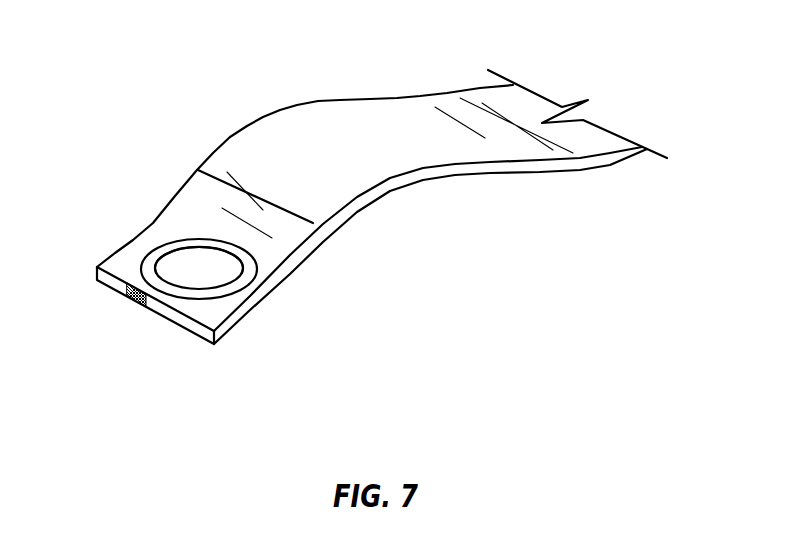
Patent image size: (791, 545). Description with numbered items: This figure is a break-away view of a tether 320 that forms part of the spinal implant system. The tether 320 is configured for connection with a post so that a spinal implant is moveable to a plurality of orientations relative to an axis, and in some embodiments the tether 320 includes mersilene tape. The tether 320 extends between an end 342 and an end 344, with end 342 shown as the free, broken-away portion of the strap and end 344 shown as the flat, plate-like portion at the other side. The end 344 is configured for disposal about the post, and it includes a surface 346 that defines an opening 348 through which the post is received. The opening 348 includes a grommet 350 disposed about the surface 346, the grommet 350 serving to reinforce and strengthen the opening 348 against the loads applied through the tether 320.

The tether 320 is at (372, 93).
The end 342 is at (530, 120).
The end 344 is at (185, 322).
The surface 346 is at (247, 293).
The opening 348 is at (188, 268).
The grommet 350 is at (143, 287).